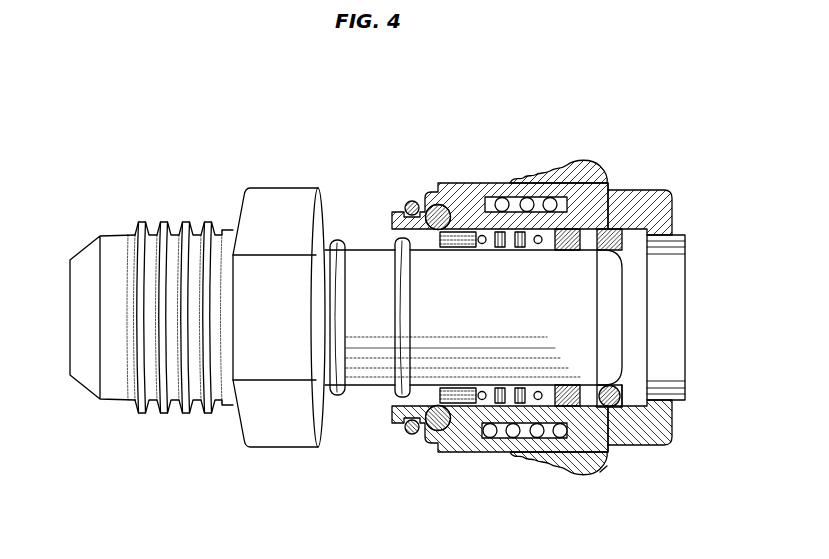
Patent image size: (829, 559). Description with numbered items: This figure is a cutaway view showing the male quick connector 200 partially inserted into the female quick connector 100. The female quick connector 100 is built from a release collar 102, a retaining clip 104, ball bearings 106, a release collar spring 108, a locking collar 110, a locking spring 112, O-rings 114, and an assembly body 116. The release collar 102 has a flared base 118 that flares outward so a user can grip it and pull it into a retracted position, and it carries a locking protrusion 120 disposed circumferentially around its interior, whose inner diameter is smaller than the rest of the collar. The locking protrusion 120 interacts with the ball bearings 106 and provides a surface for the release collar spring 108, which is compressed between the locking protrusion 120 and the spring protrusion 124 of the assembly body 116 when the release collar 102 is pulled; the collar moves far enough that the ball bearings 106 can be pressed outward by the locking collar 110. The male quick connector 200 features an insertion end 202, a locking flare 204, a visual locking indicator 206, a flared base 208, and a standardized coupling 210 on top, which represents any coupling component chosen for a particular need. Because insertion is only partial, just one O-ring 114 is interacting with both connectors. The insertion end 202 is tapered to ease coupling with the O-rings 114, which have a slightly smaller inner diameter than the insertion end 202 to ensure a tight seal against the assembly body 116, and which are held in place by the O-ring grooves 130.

The female quick connector 100 is at (679, 121).
The release collar 102 is at (565, 175).
The retaining clip 104 is at (406, 432).
The ball bearings 106 is at (437, 208).
The release collar spring 108 is at (502, 203).
The locking collar 110 is at (460, 402).
The locking spring 112 is at (498, 405).
The O-rings 114 is at (608, 410).
The assembly body 116 is at (665, 415).
The flared base 118 is at (600, 480).
The locking protrusion 120 is at (468, 210).
The spring protrusion 124 is at (603, 178).
The O-ring grooves 130 is at (610, 235).
The male quick connector 200 is at (130, 447).
The insertion end 202 is at (583, 320).
The locking flare 204 is at (392, 240).
The visual locking indicator 206 is at (333, 240).
The flared base 208 is at (283, 205).
The standardized coupling 210 is at (87, 268).